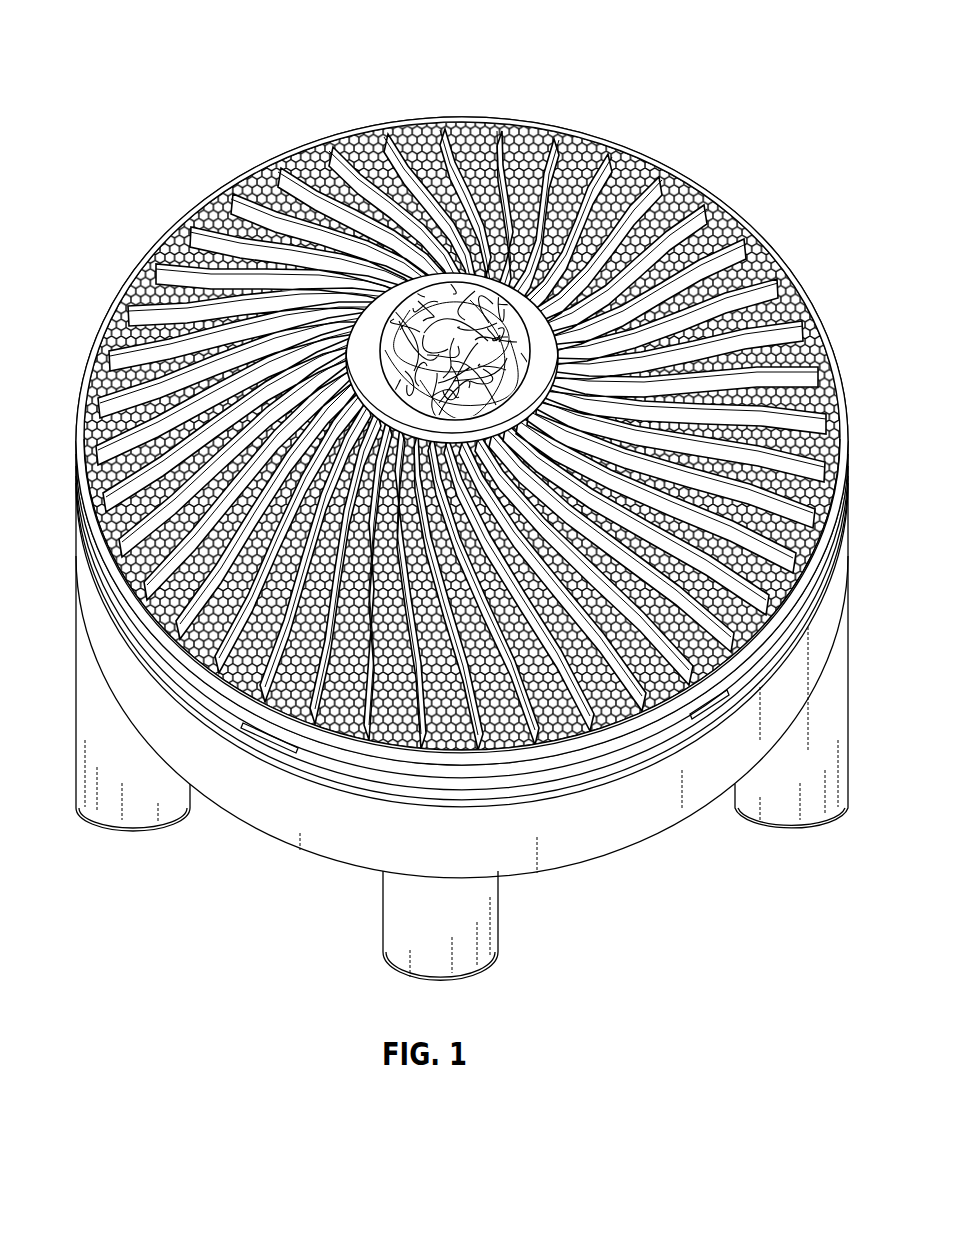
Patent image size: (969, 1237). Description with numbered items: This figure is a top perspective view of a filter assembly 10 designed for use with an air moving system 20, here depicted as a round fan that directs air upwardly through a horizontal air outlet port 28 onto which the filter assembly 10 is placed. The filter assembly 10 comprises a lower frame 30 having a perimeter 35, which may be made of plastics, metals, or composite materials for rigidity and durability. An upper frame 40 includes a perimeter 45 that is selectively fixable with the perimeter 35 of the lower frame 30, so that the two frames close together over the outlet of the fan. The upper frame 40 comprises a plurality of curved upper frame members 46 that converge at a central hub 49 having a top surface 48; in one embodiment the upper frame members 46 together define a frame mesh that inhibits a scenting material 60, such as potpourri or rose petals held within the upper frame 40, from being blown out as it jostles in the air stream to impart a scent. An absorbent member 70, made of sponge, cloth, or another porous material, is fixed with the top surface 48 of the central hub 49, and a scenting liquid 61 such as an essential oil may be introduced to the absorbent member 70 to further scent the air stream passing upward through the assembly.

The filter assembly 10 is at (150, 37).
The air moving system 20 is at (283, 820).
The air outlet port 28 is at (613, 768).
The lower frame 30 is at (540, 767).
The perimeter 35 is at (462, 638).
The upper frame 40 is at (173, 233).
The perimeter 45 is at (462, 596).
The upper frame members 46 is at (722, 257).
The top surface 48 is at (535, 383).
The central hub 49 is at (452, 391).
The scenting material 60 is at (177, 462).
The scenting liquid 61 is at (455, 351).
The absorbent member 70 is at (430, 300).